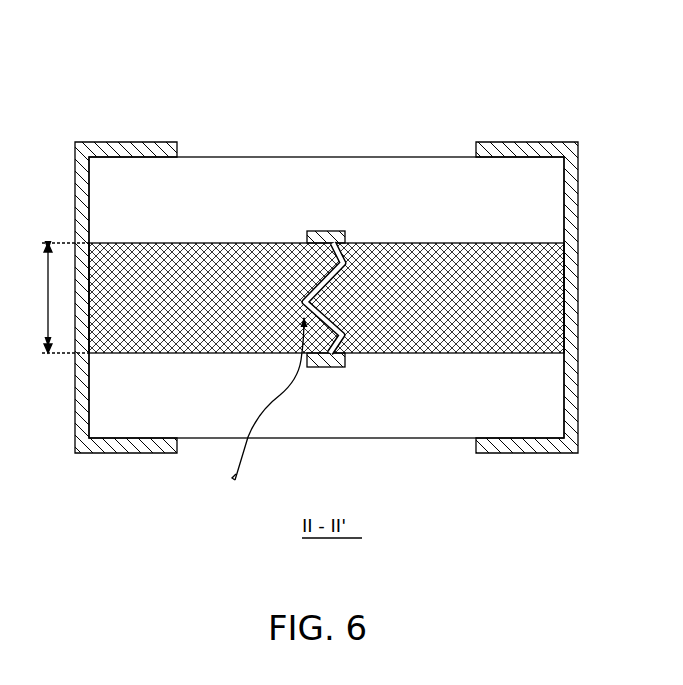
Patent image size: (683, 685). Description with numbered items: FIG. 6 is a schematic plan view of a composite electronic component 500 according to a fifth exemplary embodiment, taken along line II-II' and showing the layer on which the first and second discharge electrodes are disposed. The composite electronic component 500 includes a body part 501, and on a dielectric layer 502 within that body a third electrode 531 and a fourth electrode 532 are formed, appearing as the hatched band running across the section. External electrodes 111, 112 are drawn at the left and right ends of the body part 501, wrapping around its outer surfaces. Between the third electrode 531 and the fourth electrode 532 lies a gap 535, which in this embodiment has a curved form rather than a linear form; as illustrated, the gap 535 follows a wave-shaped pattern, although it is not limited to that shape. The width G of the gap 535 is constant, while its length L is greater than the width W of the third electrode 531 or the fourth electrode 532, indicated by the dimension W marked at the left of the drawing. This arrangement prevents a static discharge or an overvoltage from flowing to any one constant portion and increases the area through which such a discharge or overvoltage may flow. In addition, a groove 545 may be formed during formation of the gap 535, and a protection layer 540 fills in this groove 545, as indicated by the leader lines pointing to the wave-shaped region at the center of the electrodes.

The composite electronic component 500 is at (151, 43).
The body part 501 is at (224, 139).
The dielectric layer 502 is at (442, 178).
The first external electrode 111 is at (103, 143).
The second external electrode 112 is at (552, 142).
The third electrode 531 is at (160, 270).
The fourth electrode 532 is at (562, 295).
The gap 535 is at (306, 231).
The protection layer 540 is at (345, 231).
The groove 545 is at (325, 231).